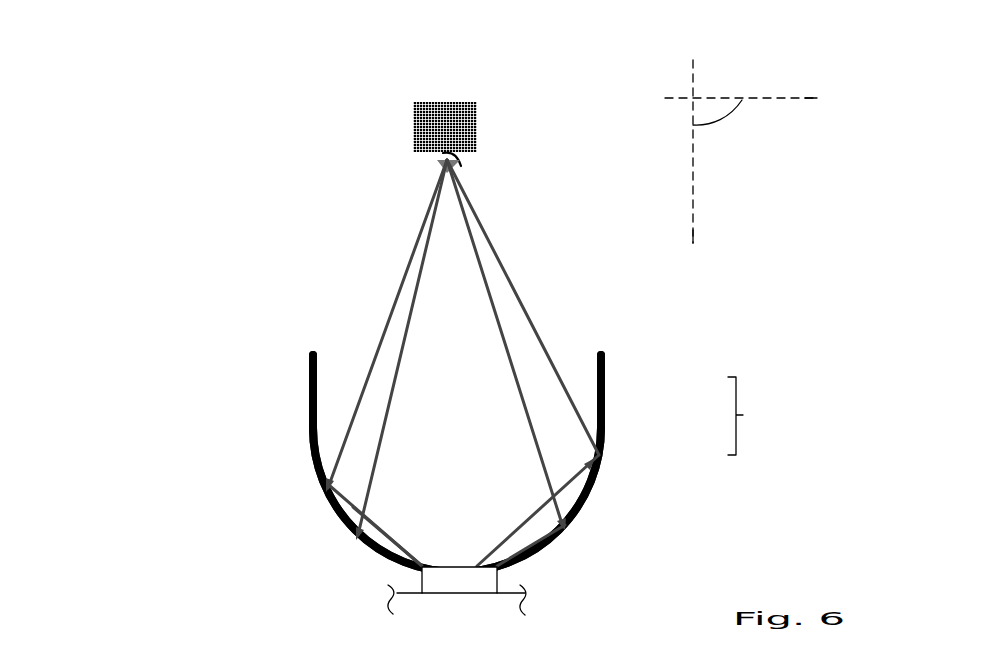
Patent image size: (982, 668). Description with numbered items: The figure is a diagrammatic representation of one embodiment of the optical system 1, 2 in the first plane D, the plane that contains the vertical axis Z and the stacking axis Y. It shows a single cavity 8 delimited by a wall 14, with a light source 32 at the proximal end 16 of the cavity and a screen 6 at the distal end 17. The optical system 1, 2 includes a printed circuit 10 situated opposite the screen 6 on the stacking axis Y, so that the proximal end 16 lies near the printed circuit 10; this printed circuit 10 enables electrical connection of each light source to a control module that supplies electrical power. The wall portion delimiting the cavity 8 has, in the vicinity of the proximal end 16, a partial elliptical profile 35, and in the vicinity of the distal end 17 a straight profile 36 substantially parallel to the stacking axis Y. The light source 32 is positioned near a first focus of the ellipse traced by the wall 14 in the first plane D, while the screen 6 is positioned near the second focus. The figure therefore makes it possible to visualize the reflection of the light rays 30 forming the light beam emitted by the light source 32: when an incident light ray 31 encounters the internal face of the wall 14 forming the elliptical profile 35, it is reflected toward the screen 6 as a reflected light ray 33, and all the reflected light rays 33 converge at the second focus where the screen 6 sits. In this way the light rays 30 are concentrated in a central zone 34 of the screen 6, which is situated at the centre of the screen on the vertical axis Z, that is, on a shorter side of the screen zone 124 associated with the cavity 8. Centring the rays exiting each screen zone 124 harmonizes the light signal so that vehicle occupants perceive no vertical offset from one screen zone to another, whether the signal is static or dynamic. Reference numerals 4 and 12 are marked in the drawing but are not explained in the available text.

The optical system 1 is at (166, 170).
The optical system 2 is at (166, 170).
The optical arrangement 4 is at (242, 270).
The screen 6 is at (430, 122).
The cavity 8 is at (436, 466).
The printed circuit 10 is at (409, 598).
The reflector 12 is at (405, 354).
The wall 14 is at (342, 528).
The proximal end 16 is at (350, 577).
The distal end 17 is at (616, 333).
The light rays 30 is at (756, 416).
The incident light ray 31 is at (580, 478).
The light source 32 is at (458, 583).
The reflected light ray 33 is at (580, 366).
The central zone 34 is at (460, 167).
The elliptical profile 35 is at (590, 520).
The straight profile 36 is at (288, 392).
The screen zone 124 is at (413, 95).
The first plane D is at (716, 110).
The stacking axis Y is at (695, 239).
The vertical axis Z is at (812, 98).